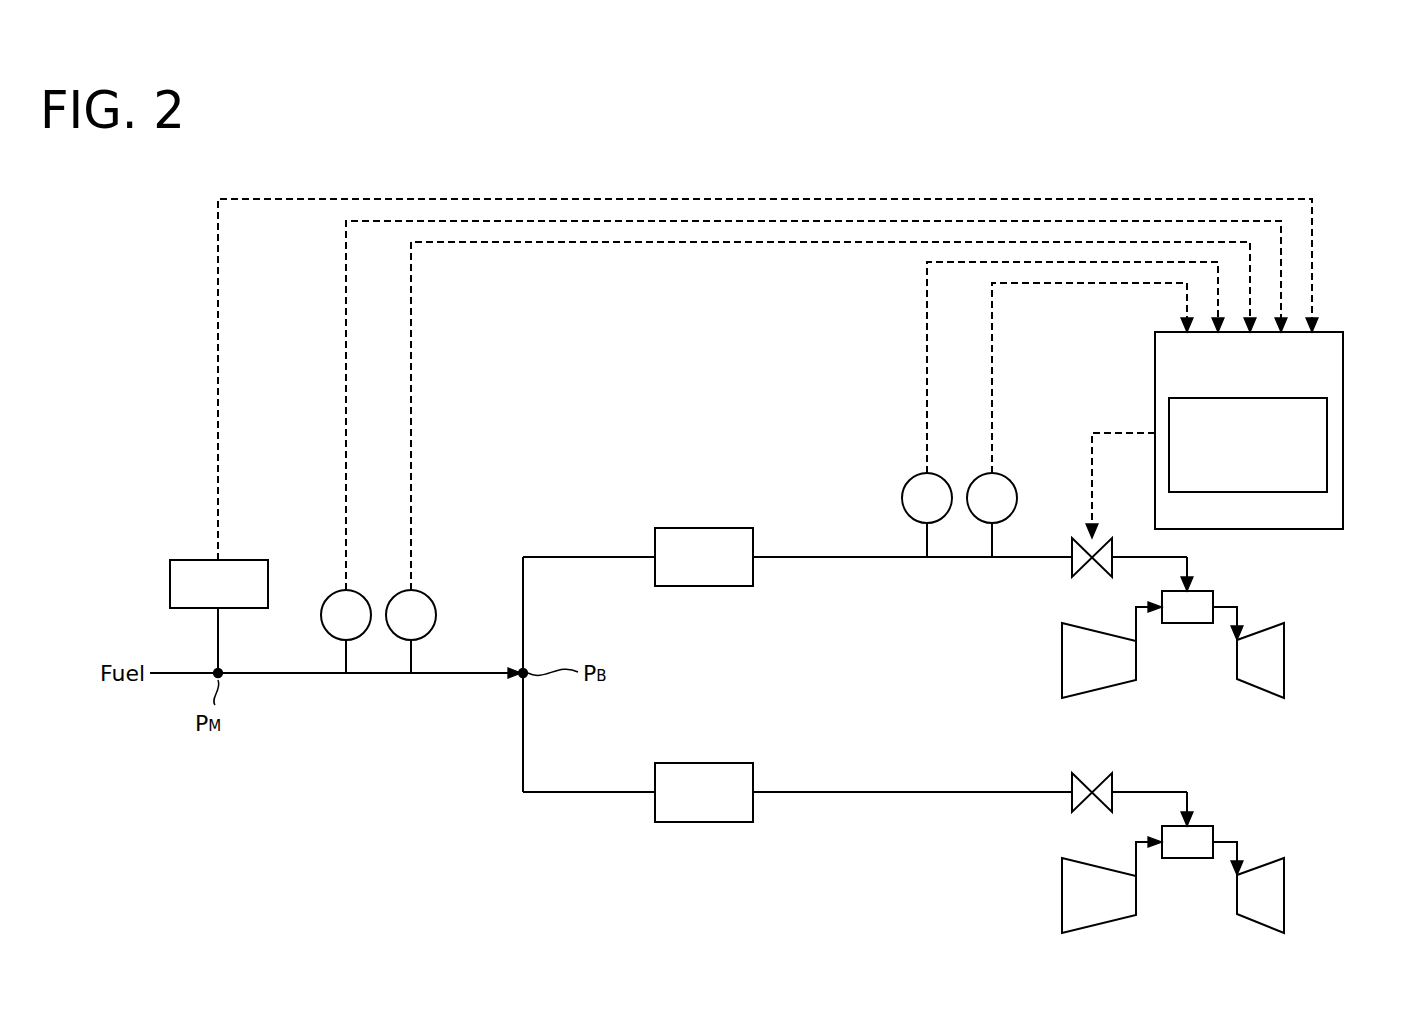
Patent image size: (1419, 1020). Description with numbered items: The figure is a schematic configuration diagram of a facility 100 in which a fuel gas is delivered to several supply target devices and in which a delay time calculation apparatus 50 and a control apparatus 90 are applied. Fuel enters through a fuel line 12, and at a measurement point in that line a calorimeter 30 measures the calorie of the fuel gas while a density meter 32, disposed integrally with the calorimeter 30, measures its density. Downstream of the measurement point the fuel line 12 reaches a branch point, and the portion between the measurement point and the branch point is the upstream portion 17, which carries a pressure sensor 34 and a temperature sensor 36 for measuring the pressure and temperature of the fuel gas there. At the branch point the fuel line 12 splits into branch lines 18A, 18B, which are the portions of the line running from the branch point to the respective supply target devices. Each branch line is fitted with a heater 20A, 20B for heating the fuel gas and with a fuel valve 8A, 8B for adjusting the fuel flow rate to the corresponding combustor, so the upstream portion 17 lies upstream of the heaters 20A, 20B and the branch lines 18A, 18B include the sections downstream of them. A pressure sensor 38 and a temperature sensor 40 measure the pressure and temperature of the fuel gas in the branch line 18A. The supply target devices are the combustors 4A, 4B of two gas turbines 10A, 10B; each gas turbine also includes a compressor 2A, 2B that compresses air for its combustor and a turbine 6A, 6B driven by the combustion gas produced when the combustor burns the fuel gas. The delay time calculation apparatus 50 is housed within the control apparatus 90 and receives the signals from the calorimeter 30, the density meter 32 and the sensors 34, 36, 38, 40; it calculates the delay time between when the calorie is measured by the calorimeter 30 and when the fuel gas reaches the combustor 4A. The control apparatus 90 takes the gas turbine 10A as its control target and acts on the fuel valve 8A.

The facility 100 is at (1367, 143).
The compressor 2A is at (1061, 665).
The compressor 2B is at (1061, 900).
The combustor 4A is at (1213, 598).
The combustor 4B is at (1213, 833).
The turbine 6A is at (1284, 690).
The turbine 6B is at (1284, 925).
The fuel valve 8A is at (1071, 567).
The fuel valve 8B is at (1071, 802).
The gas turbine 10A is at (1189, 618).
The gas turbine 10B is at (1189, 853).
The fuel line 12 is at (671, 705).
The upstream portion 17 is at (281, 678).
The branch line 18A is at (799, 562).
The branch line 18B is at (799, 797).
The heater 20A is at (717, 527).
The heater 20B is at (717, 762).
The calorimeter 30 is at (744, 436).
The density meter 32 is at (254, 559).
The pressure sensor 34 is at (364, 592).
The temperature sensor 36 is at (429, 592).
The pressure sensor 38 is at (946, 474).
The temperature sensor 40 is at (1011, 474).
The delay time calculation apparatus 50 is at (1327, 443).
The control apparatus 90 is at (1249, 435).